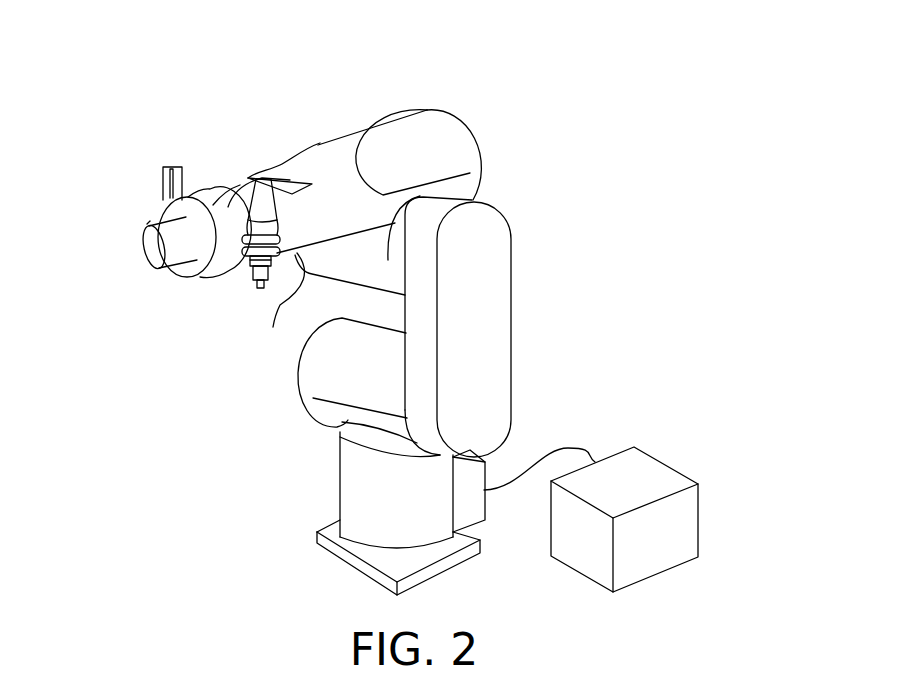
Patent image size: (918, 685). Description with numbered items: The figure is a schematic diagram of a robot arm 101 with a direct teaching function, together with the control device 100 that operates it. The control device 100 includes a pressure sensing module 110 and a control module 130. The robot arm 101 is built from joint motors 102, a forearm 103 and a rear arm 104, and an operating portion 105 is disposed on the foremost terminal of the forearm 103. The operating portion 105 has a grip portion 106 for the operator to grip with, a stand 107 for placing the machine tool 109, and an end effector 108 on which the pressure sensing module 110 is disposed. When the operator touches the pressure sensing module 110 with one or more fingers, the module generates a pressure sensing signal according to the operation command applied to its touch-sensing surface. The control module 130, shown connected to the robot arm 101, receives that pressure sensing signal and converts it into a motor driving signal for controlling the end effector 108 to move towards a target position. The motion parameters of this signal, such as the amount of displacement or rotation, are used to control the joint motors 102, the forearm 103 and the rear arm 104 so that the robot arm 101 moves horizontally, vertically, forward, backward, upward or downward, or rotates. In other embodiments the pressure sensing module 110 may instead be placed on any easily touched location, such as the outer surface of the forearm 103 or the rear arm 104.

The control device 100 is at (119, 32).
The robot arm 101 is at (250, 119).
The joint motors 102 is at (243, 197).
The forearm 103 is at (347, 165).
The rear arm 104 is at (487, 332).
The operating portion 105 is at (107, 347).
The grip portion 106 is at (197, 277).
The stand 107 is at (243, 265).
The end effector 108 is at (155, 268).
The machine tool 109 is at (267, 168).
The pressure sensing module 110 is at (153, 230).
The control module 130 is at (667, 462).